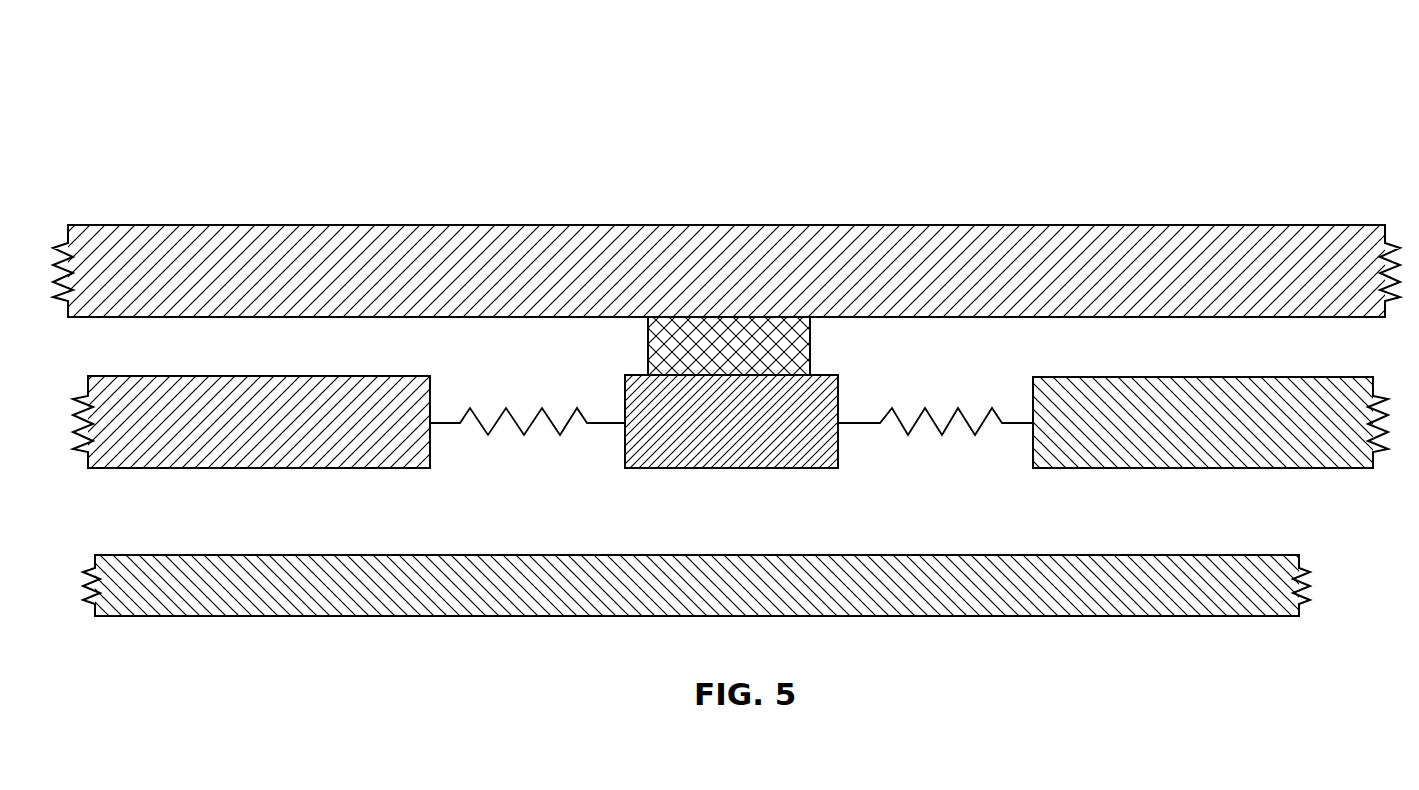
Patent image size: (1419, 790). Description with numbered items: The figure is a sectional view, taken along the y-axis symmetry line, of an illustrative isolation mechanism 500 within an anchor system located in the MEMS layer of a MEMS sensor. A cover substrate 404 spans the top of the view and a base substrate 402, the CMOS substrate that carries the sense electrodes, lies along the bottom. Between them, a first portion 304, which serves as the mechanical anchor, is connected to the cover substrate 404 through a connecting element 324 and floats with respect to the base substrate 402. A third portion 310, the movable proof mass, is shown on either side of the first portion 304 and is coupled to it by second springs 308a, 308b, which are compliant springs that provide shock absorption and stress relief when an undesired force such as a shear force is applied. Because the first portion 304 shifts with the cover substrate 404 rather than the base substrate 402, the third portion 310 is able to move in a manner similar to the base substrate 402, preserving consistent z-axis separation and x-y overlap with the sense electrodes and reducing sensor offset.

The sensor system 500 is at (203, 72).
The cover substrate 404 is at (220, 225).
The base substrate 402 is at (612, 555).
The contact element 324 is at (648, 357).
The first portion 304 is at (818, 375).
The third portion 310 is at (405, 376).
The second spring 308a is at (515, 437).
The second spring 308b is at (990, 437).